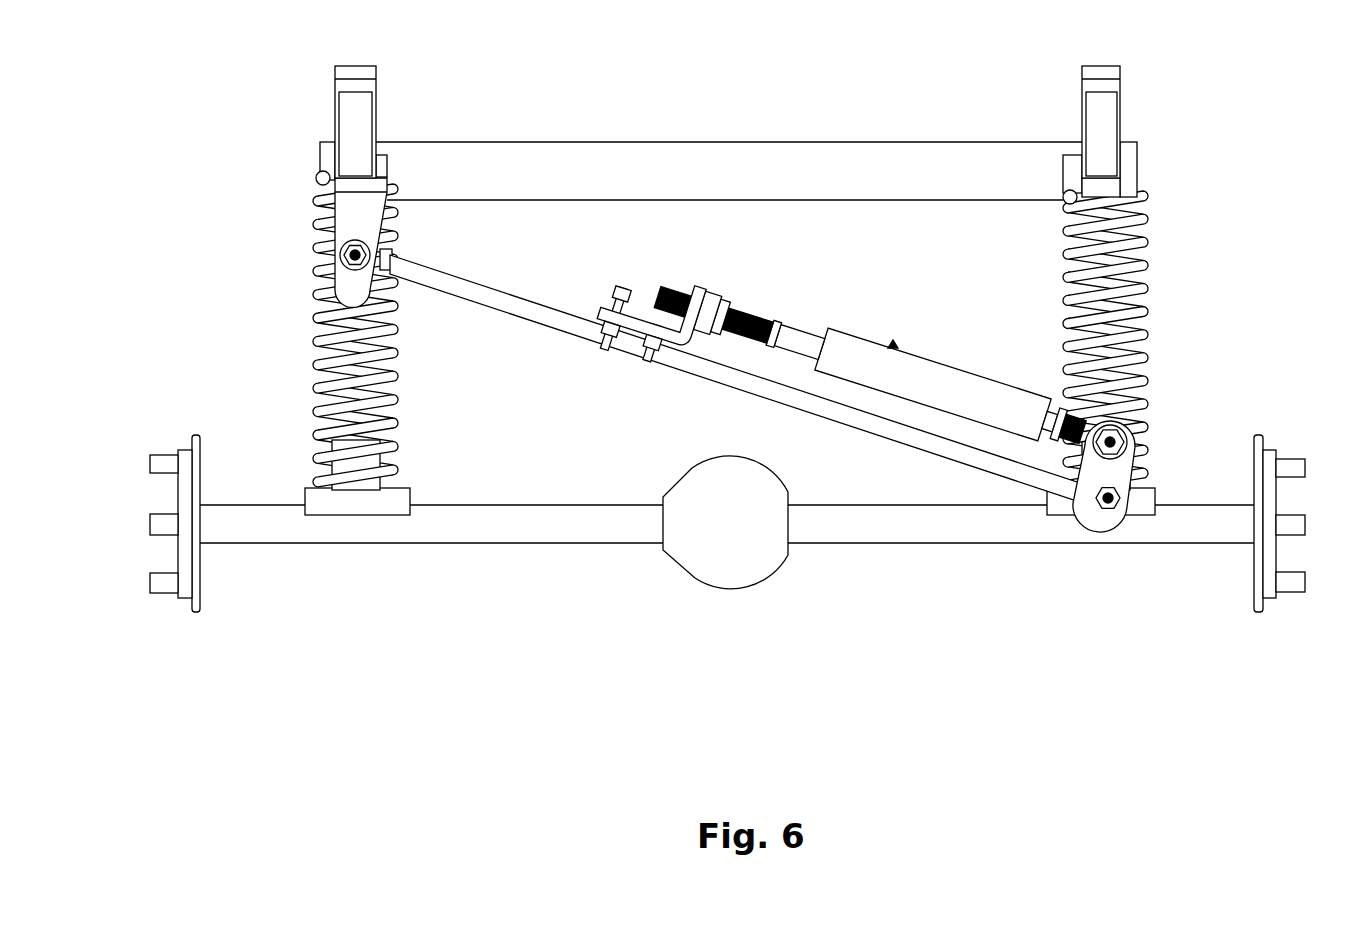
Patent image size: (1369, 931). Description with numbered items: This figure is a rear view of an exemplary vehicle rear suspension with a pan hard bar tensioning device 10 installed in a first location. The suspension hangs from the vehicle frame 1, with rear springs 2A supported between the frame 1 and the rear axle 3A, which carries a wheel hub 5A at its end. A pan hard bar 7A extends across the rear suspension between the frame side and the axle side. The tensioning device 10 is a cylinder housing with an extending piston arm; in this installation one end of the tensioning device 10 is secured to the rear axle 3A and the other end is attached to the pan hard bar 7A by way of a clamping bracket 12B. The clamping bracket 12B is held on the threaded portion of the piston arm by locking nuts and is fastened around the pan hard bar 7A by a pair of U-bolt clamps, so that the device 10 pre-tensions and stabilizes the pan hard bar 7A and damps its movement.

The frame 1 is at (1140, 160).
The rear springs 2A is at (1147, 280).
The rear axle 3A is at (543, 545).
The wheel hub 5A is at (1276, 450).
The pan hard bar 7A is at (470, 298).
The tensioning device 10 is at (917, 352).
The clamping bracket 12B is at (687, 343).